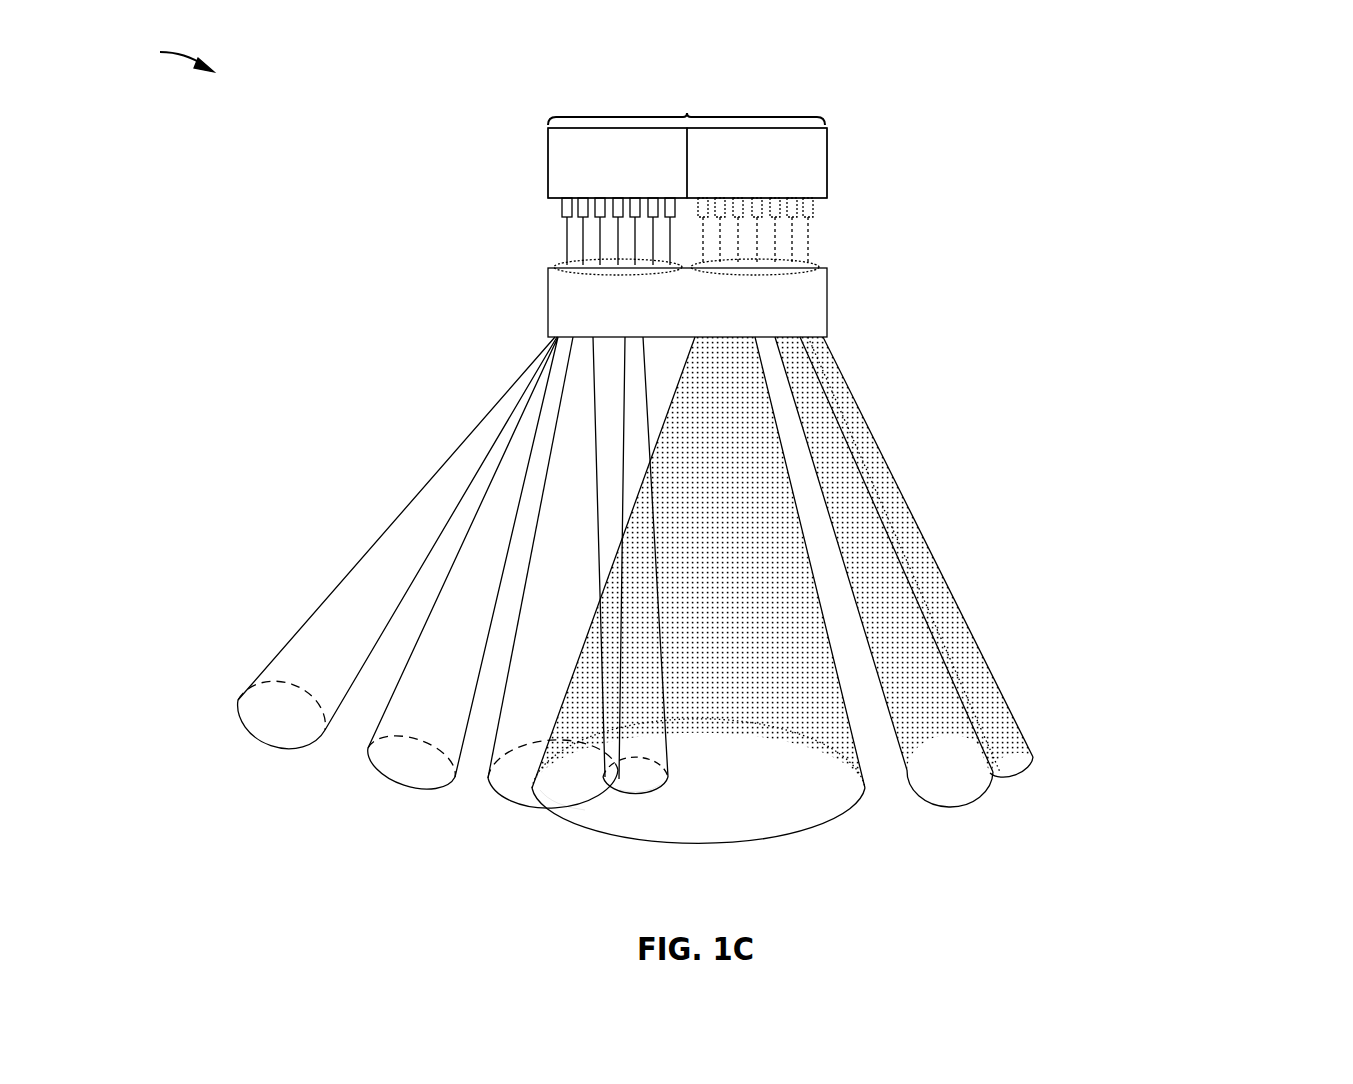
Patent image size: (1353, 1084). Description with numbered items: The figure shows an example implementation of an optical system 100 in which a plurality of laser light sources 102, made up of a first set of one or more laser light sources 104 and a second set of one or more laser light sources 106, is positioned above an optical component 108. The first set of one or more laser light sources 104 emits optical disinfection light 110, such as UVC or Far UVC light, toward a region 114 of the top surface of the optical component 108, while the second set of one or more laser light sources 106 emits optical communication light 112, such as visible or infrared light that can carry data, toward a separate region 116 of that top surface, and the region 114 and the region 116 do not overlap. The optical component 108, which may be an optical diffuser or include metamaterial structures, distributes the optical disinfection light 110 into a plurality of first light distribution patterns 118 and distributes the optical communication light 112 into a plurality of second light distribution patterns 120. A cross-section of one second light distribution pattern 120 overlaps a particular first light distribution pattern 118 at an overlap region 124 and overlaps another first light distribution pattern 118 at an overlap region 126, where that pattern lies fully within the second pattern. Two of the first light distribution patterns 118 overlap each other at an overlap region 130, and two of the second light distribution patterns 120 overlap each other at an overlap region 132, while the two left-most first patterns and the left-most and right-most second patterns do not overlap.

The optical system 100 is at (157, 56).
The plurality of laser light sources 102 is at (687, 113).
The first set of one or more laser light sources 104 is at (637, 187).
The second set of one or more laser light sources 106 is at (775, 187).
The optical component 108 is at (707, 326).
The optical disinfection light 110 is at (602, 258).
The optical communication light 112 is at (773, 244).
The region 114 is at (553, 277).
The region 116 is at (817, 272).
The first light distribution patterns 118 is at (630, 457).
The second light distribution patterns 120 is at (880, 477).
The overlap region 124 is at (555, 787).
The overlap region 126 is at (643, 770).
The overlap region 130 is at (613, 778).
The overlap region 132 is at (992, 762).